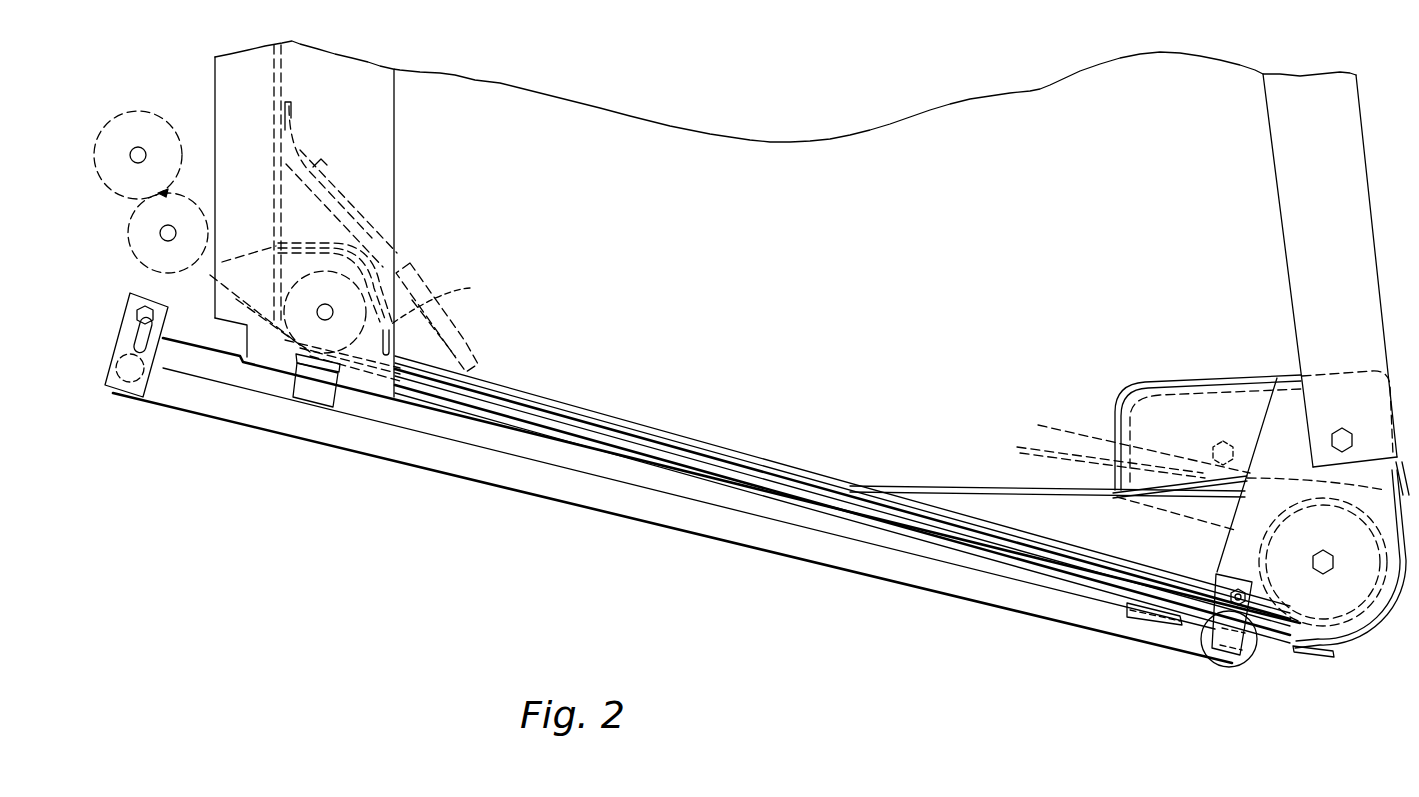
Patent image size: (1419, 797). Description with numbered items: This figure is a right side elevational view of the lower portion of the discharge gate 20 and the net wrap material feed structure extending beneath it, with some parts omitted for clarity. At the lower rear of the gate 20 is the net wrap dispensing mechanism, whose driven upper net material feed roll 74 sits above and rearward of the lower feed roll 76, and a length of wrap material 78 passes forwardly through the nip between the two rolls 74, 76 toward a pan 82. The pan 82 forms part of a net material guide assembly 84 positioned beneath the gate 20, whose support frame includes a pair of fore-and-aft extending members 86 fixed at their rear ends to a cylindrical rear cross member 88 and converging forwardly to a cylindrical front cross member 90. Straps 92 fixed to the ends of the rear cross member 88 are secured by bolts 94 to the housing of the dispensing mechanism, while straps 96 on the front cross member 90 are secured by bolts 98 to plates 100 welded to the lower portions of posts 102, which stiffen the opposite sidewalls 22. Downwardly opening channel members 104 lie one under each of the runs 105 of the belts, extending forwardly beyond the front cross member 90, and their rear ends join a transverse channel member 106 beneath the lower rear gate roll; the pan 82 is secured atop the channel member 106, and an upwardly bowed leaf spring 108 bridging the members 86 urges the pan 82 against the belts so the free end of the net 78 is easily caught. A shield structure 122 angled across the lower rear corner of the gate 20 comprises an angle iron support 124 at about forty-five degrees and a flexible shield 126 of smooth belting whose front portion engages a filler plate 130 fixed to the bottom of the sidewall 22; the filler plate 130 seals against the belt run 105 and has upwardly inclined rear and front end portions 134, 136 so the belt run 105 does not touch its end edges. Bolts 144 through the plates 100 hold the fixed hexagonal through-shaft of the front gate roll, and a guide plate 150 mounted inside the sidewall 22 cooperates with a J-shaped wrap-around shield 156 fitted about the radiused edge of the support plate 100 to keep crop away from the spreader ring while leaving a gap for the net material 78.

The discharge gate 20 is at (828, 100).
The sidewalls 22 is at (762, 253).
The upper net material feed roll 74 is at (164, 113).
The lower feed roll 76 is at (166, 193).
The length of wrap material 78 is at (243, 250).
The pan 82 is at (246, 326).
The net material guide assembly 84 is at (546, 560).
The fore-and-aft extending members 86 is at (706, 541).
The rear cross member 88 is at (143, 395).
The front cross member 90 is at (1248, 657).
The straps 92 is at (121, 316).
The bolts 94 is at (158, 300).
The straps 96 is at (1207, 620).
The bolts 98 is at (1220, 573).
The plates 100 is at (1267, 408).
The posts 102 is at (1275, 173).
The channel members 104 is at (543, 440).
The runs of the belts 105 is at (797, 498).
The channel member 106 is at (337, 405).
The leaf spring 108 is at (290, 398).
The shield structure 122 is at (416, 254).
The support 124 is at (347, 183).
The flexible shield 126 is at (296, 130).
The filler plate 130 is at (661, 440).
The rear end portion 134 is at (453, 296).
The front end portion 136 is at (1323, 562).
The bolts 144 is at (1328, 577).
The guide plate 150 is at (1138, 402).
The wrap-around shield 156 is at (1387, 623).